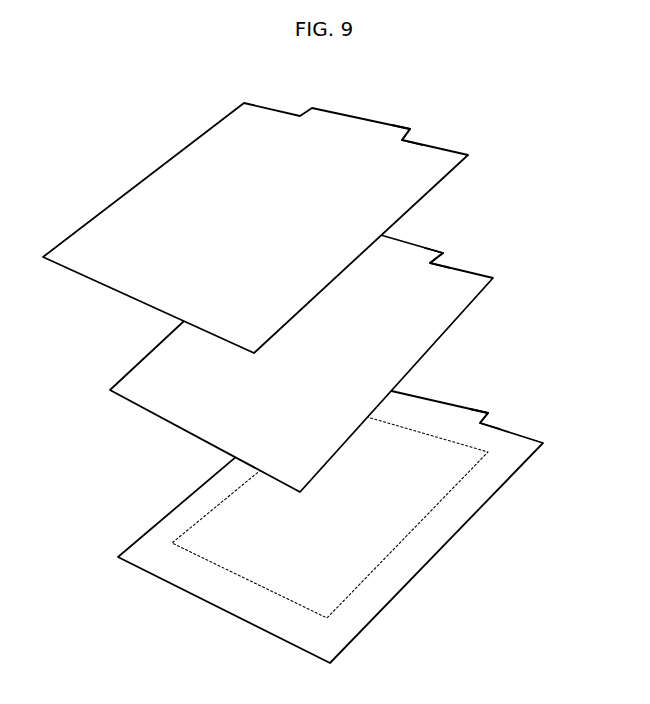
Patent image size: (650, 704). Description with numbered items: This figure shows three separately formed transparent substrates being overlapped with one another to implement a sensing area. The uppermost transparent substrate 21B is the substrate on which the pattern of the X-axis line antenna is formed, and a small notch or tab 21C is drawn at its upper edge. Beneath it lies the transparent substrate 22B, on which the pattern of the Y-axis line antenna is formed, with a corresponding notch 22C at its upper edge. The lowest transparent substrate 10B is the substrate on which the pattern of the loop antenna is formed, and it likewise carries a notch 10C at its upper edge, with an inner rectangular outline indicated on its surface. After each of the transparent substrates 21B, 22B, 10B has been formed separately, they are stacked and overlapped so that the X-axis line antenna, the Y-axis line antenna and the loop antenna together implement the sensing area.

The transparent substrate 10B is at (450, 543).
The notch of lower substrate 10C is at (492, 413).
The transparent substrate 22B is at (168, 432).
The notch of second intermediate plate 22C is at (446, 253).
The transparent substrate 21B is at (120, 300).
The notch of first upper plate 21C is at (412, 128).